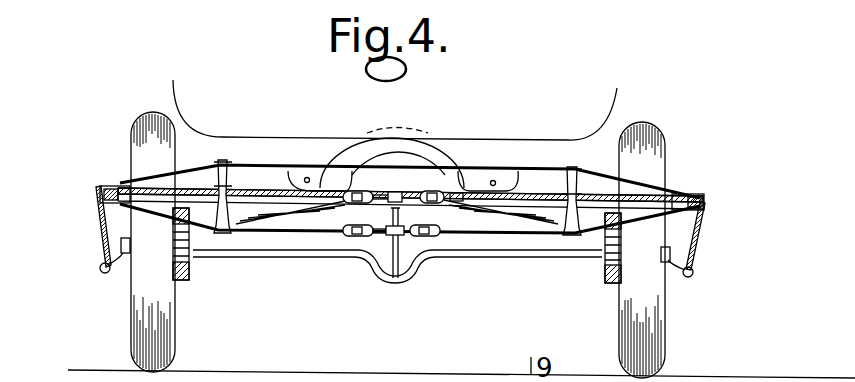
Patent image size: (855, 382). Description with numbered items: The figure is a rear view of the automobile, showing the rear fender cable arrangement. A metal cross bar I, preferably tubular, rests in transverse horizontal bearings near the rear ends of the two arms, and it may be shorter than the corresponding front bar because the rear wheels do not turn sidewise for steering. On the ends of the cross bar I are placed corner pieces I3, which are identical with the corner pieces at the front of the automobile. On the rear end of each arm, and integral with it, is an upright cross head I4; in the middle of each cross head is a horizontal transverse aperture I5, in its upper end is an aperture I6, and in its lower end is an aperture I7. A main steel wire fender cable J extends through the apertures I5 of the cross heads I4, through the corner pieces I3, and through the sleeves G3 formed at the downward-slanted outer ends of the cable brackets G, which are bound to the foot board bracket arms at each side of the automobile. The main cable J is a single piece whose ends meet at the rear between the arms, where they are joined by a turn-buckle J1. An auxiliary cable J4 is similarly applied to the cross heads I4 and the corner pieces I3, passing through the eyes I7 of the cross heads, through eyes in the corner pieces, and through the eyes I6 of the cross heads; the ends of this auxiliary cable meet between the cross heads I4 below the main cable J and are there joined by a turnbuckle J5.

The cross bar I is at (198, 187).
The corner pieces I3 is at (120, 187).
The cross head I4 is at (232, 172).
The aperture I5 is at (228, 187).
The aperture I6 is at (231, 166).
The aperture I7 is at (240, 237).
The main steel wire fender cable J is at (598, 200).
The turn-buckle J1 is at (395, 189).
The auxiliary cable J4 is at (398, 187).
The turnbuckle J5 is at (388, 233).
The cable bracket G is at (125, 262).
The sleeve G3 is at (103, 268).